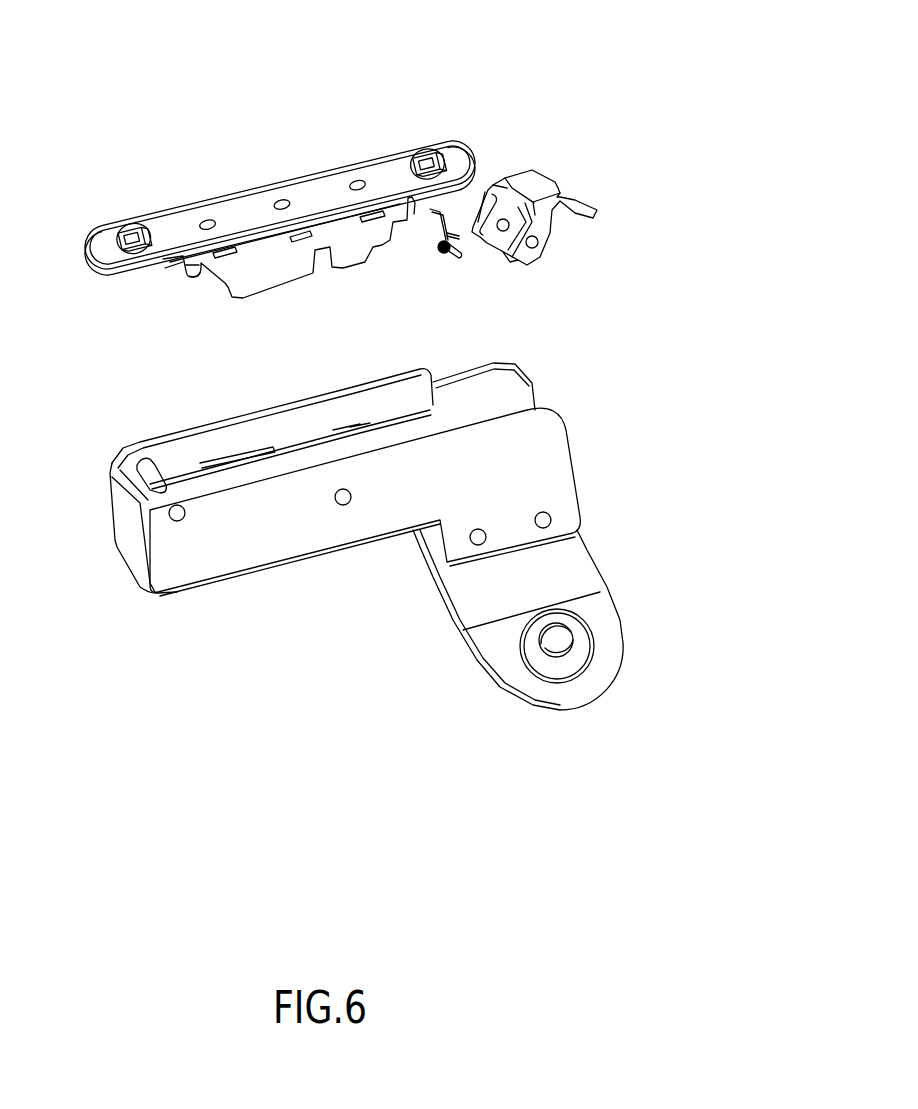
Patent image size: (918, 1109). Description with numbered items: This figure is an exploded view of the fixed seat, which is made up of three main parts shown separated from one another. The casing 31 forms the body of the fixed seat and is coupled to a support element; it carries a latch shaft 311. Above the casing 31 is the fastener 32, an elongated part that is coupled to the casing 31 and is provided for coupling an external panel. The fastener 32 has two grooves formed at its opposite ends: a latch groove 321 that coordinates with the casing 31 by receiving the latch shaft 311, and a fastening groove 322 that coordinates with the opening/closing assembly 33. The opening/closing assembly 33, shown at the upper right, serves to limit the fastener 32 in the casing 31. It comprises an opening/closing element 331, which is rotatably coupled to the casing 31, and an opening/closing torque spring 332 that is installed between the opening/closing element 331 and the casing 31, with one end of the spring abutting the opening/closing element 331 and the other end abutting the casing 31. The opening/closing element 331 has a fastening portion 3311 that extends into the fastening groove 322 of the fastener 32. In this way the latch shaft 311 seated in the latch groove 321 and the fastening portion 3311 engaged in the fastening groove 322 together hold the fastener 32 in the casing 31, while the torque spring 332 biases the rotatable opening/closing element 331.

The casing 31 is at (265, 550).
The latch shaft 311 is at (150, 480).
The fastener 32 is at (302, 197).
The latch groove 321 is at (187, 272).
The fastening groove 322 is at (402, 213).
The opening/closing assembly 33 is at (560, 75).
The opening/closing element 331 is at (528, 180).
The fastening portion 3311 is at (511, 258).
The opening/closing torque spring 332 is at (445, 240).